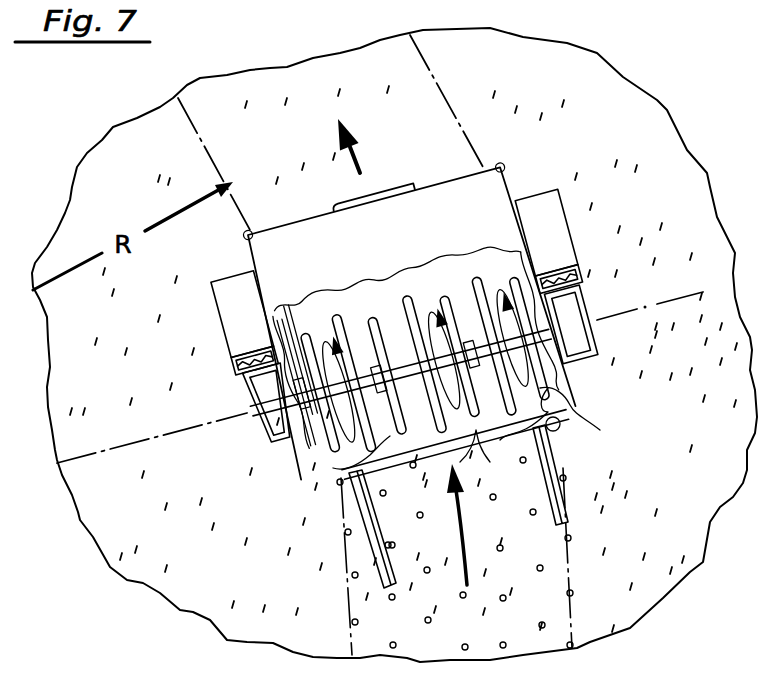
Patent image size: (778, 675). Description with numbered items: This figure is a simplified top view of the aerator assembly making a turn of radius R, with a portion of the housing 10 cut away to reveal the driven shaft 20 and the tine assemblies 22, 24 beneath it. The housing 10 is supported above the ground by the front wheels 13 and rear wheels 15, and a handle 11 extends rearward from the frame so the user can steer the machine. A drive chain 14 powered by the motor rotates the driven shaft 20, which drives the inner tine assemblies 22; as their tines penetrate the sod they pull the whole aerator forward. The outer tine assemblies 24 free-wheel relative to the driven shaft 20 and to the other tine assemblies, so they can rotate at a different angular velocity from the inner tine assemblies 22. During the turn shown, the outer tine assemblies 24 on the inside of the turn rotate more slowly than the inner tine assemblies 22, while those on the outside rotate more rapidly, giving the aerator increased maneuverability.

The housing 10 is at (405, 319).
The handle 11 is at (560, 500).
The front wheels 13 is at (357, 200).
The drive chain 14 is at (300, 302).
The rear wheels 15 is at (277, 425).
The driven shaft 20 is at (385, 310).
The inner tine assemblies 22 is at (490, 462).
The outer tine assemblies 24 is at (325, 470).